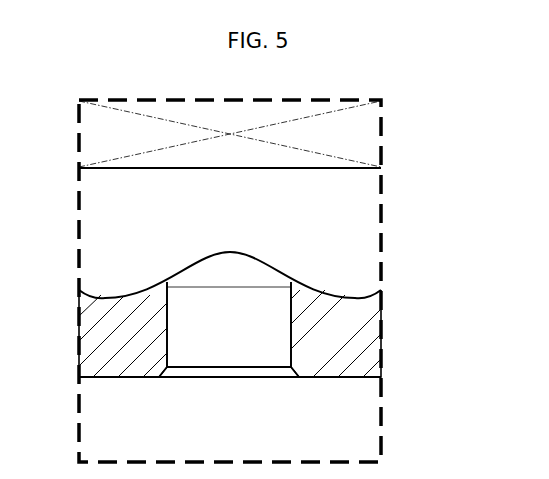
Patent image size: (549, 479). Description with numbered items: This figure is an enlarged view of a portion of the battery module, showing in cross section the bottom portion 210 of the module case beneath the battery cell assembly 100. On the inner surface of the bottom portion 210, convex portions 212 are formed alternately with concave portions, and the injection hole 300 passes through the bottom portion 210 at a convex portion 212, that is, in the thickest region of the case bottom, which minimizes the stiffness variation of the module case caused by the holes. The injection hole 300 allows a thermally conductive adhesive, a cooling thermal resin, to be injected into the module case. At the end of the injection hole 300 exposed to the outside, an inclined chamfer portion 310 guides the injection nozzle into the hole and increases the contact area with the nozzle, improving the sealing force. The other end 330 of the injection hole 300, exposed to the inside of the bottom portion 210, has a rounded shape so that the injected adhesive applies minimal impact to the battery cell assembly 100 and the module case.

The battery cell assembly 100 is at (376, 143).
The bottom portion 210 is at (378, 335).
The convex portion 212 is at (229, 251).
The other end 330 is at (270, 272).
The chamfer portion 310 is at (292, 378).
The injection hole 300 is at (190, 383).